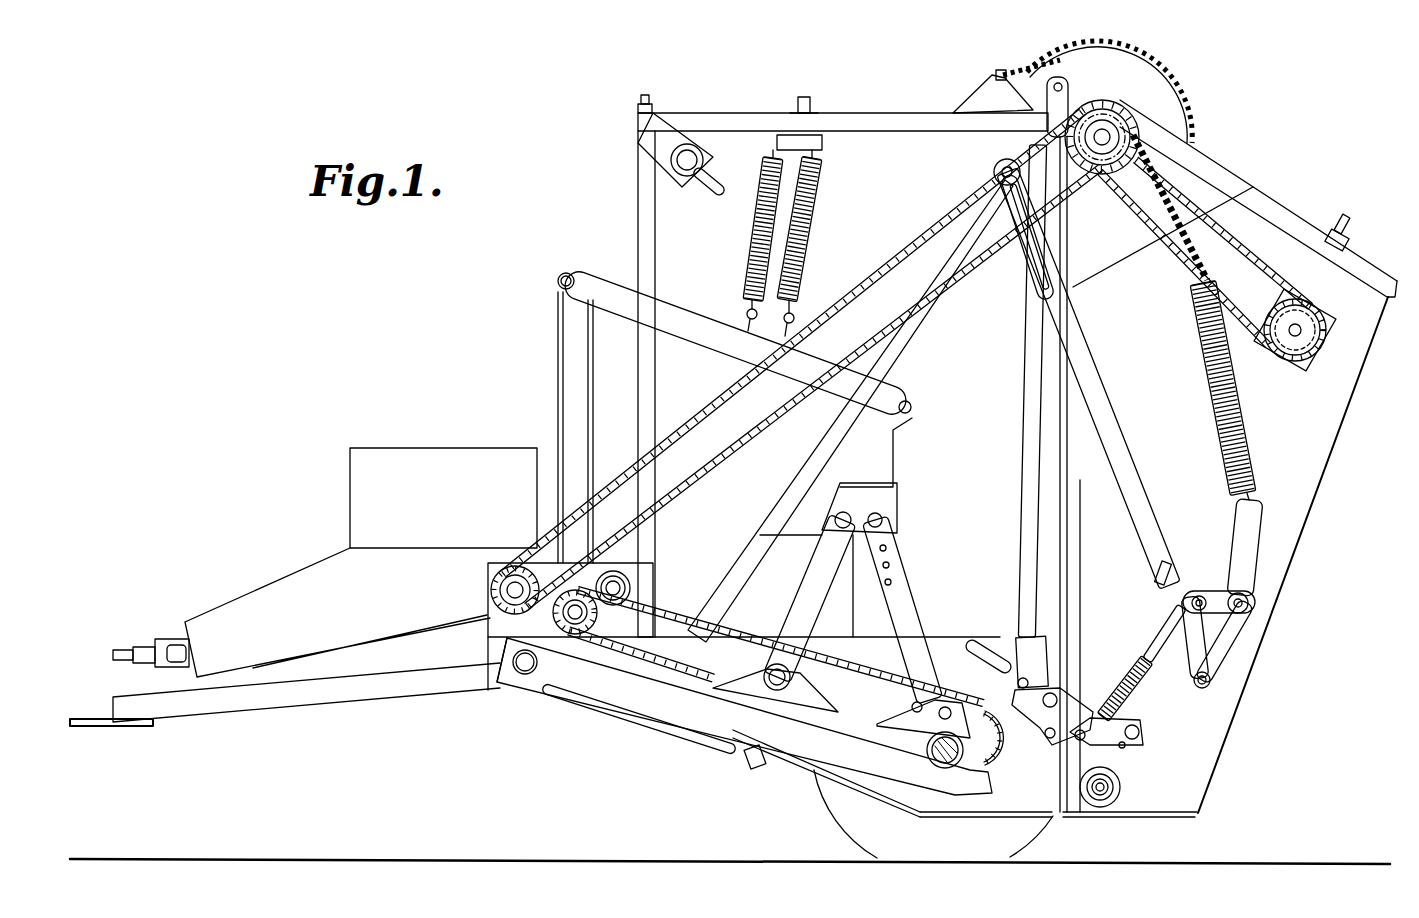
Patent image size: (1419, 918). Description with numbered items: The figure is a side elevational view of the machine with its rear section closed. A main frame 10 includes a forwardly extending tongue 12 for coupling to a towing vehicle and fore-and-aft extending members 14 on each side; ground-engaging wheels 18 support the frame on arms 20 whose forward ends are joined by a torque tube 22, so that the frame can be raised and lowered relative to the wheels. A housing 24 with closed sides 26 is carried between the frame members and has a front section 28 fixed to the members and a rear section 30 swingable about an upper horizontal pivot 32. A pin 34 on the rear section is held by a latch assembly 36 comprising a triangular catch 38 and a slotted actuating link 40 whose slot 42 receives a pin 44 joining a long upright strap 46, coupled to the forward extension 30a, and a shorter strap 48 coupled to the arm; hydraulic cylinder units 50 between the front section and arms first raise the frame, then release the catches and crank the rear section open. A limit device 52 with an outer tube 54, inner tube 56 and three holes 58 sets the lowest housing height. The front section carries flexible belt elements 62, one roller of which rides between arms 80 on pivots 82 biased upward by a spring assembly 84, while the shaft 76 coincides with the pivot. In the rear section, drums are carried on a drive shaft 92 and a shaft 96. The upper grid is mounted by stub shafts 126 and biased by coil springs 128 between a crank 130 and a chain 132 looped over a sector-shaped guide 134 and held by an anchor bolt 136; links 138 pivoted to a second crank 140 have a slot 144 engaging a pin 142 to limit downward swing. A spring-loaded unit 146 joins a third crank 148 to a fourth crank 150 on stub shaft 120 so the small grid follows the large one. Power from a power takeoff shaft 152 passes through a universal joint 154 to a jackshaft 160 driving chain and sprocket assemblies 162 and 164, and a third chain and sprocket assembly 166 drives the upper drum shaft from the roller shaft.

The main frame 10 is at (502, 704).
The tongue 12 is at (262, 718).
The fore-and-aft extending members 14 is at (726, 650).
The ground-engaging wheels 18 is at (843, 828).
The arms 20 is at (672, 737).
The torque tube 22 is at (512, 660).
The housing 24 is at (904, 110).
The sides 26 is at (848, 142).
The front section 28 is at (634, 192).
The rear section 30 is at (1352, 437).
The forward extension 30a is at (1073, 80).
The upper horizontal pivot 32 is at (1108, 124).
The pin 34 is at (1082, 742).
The latch assembly 36 is at (1030, 720).
The catch 38 is at (1070, 715).
The slotted actuating link 40 is at (990, 640).
The slot 42 is at (985, 662).
The pin 44 is at (1072, 688).
The upright strap 46 is at (1027, 488).
The strap 48 is at (991, 712).
The hydraulic cylinder units 50 is at (802, 576).
The limit device 52 is at (906, 553).
The outer tube 54 is at (896, 606).
The inner tube 56 is at (905, 707).
The holes 58 is at (884, 600).
The flexible belt elements 62 is at (558, 353).
The transverse shaft 76 is at (1088, 183).
The fore-and-aft extending arms 80 is at (697, 318).
The pivots 82 is at (914, 410).
The spring assembly 84 is at (812, 252).
The drive shaft 92 is at (1303, 333).
The shaft 96 is at (1118, 792).
The stub shaft 120 is at (1142, 733).
The stub shafts 126 is at (1250, 605).
The coil springs 128 is at (1250, 418).
The crank 130 is at (1257, 535).
The chain 132 is at (1193, 130).
The sector-shaped guide 134 is at (1157, 92).
The anchor bolt 136 is at (1007, 72).
The links 138 is at (1117, 432).
The second crank 140 is at (1222, 653).
The pin 142 is at (995, 172).
The slot 144 is at (1033, 262).
The spring-loaded unit 146 is at (1136, 707).
The third crank 148 is at (1208, 592).
The fourth crank 150 is at (1123, 748).
The power takeoff shaft 152 is at (120, 648).
The universal joint 154 is at (167, 638).
The jackshaft 160 is at (508, 592).
The chain and sprocket assembly 162 is at (726, 482).
The chain and sprocket assembly 164 is at (688, 612).
The chain and sprocket assembly 166 is at (1262, 254).